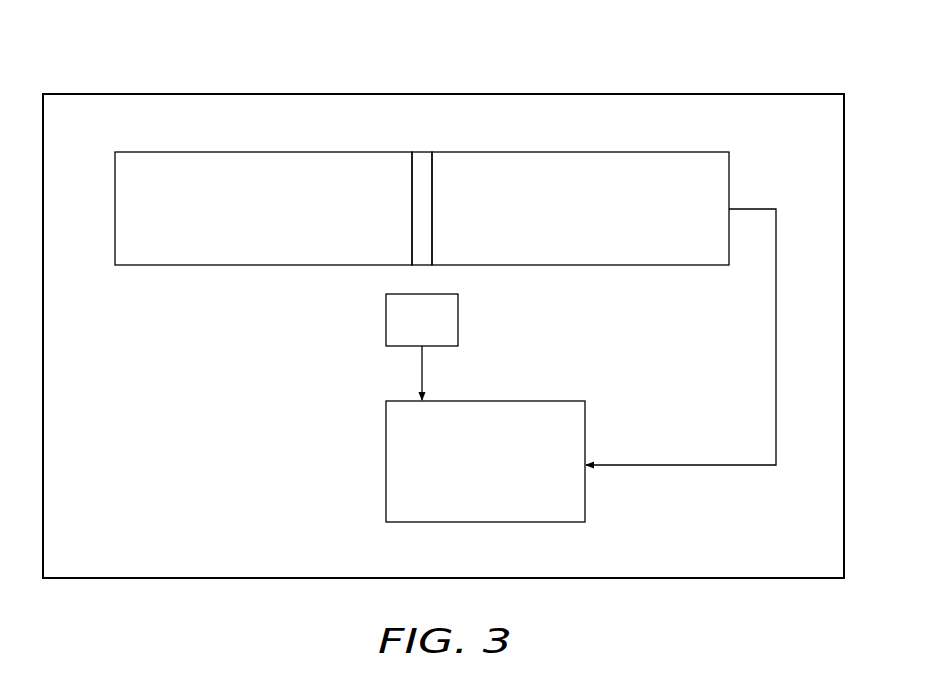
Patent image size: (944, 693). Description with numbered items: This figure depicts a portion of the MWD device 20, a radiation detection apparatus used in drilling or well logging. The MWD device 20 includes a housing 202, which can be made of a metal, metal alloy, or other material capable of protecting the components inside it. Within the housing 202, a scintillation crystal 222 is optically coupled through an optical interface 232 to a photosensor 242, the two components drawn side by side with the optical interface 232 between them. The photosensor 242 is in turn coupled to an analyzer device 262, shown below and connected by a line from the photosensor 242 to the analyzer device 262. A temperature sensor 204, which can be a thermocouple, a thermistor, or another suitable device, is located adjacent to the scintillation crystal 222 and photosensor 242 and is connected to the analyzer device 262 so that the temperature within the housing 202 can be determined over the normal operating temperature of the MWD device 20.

The MWD device 20 is at (758, 67).
The housing 202 is at (45, 462).
The scintillation crystal 222 is at (243, 219).
The optical interface 232 is at (421, 160).
The photosensor 242 is at (560, 219).
The temperature sensor 204 is at (402, 331).
The analyzer device 262 is at (465, 473).